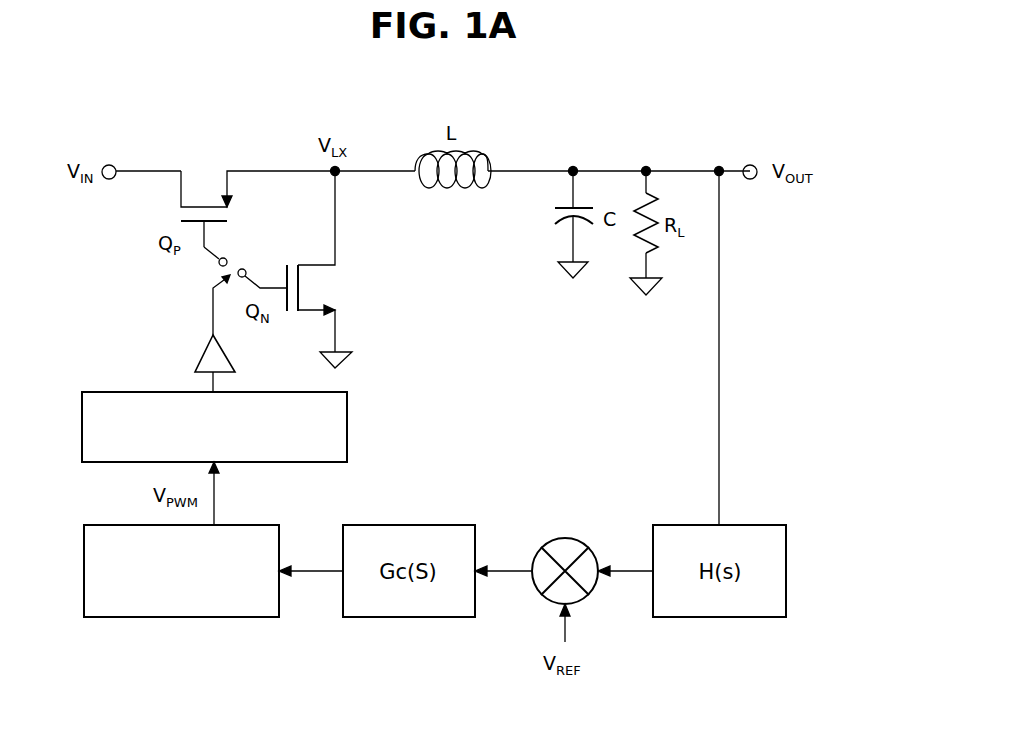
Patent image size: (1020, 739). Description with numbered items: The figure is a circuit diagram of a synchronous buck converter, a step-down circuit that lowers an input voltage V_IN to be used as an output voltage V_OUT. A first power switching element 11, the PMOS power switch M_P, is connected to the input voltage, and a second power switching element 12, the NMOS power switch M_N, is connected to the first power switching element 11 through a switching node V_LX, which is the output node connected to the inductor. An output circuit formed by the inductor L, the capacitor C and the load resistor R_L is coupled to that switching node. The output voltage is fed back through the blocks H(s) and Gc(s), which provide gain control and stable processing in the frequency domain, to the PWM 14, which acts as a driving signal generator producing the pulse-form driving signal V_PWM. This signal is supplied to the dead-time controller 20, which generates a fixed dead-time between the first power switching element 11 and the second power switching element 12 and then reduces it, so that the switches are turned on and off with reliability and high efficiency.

The first power switching element 11 is at (204, 143).
The second power switching element 12 is at (383, 289).
The PWM 14 is at (182, 617).
The dead-time controller 20 is at (347, 423).